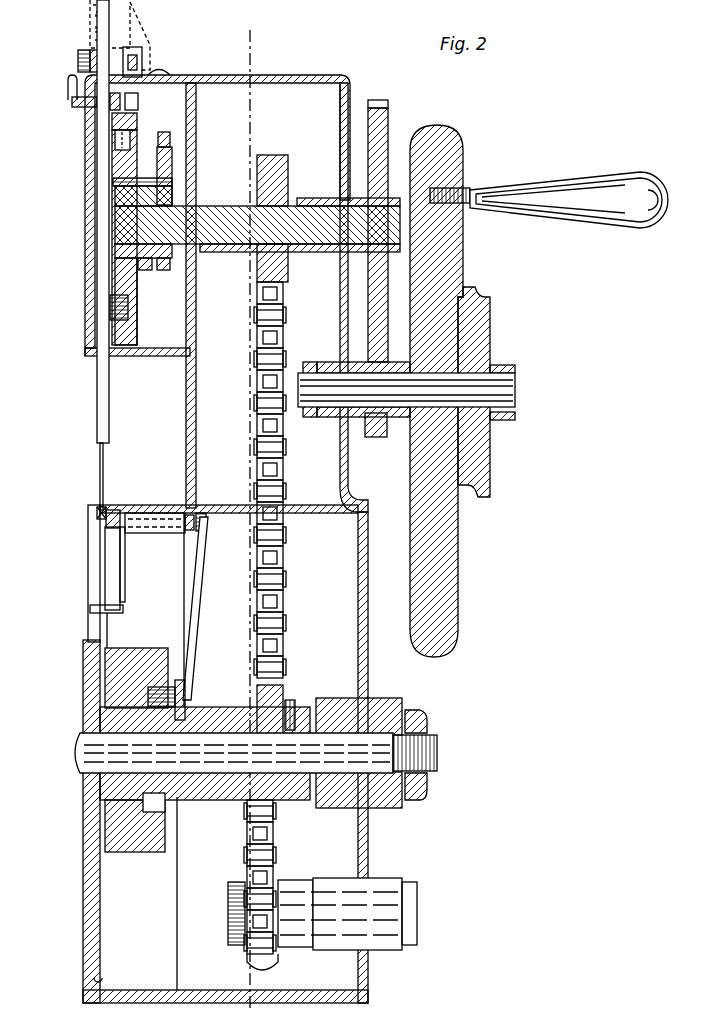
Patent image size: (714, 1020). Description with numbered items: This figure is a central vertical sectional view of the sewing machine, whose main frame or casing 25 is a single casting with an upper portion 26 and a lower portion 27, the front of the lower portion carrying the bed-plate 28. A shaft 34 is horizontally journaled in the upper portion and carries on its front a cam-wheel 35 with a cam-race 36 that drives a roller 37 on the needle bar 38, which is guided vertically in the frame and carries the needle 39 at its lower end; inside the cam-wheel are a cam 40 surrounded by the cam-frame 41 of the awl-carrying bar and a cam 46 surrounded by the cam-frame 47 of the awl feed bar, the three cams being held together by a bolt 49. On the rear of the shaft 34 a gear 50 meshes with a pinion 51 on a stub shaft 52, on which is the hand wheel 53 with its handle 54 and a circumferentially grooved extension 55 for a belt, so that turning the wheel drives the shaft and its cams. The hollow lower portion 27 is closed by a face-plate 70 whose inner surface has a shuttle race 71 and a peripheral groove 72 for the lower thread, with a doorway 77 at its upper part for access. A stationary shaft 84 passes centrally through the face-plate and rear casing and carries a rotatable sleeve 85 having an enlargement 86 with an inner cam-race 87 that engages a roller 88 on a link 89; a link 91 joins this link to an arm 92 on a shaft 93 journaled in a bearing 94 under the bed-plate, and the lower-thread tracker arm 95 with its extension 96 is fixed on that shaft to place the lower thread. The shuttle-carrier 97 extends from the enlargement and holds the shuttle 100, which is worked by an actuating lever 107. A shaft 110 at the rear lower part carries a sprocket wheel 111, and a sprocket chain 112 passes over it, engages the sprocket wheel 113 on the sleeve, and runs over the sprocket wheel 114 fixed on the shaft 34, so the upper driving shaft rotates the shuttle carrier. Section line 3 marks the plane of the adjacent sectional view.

The section line 3— 3 is at (205, 52).
The main frame or casing 25 is at (187, 378).
The upper portion of the frame 26 is at (330, 78).
The lower portion of the frame 27 is at (366, 843).
The bed-plate 28 is at (140, 508).
The shaft 34 is at (200, 215).
The cam-wheel 35 is at (140, 128).
The cam-race 36 is at (130, 147).
The roller 37 is at (118, 309).
The needle bar 38 is at (100, 266).
The needle 39 is at (100, 468).
The cam 40 is at (115, 198).
The cam-frame 41 is at (150, 271).
The cam 46 is at (172, 156).
The cam-frame 47 is at (170, 138).
The bolt 49 is at (115, 183).
The gear 50 is at (389, 130).
The pinion 51 is at (375, 438).
The stub shaft 52 is at (406, 391).
The hand wheel 53 is at (458, 246).
The handle 54 is at (549, 200).
The circumferentially grooved extension 55 is at (490, 332).
The face-plate 70 is at (84, 875).
The shuttle race 71 is at (92, 985).
The peripheral groove 72 is at (100, 975).
The doorway 77 is at (88, 592).
The stationary shaft 84 is at (256, 753).
The sleeve 85 is at (206, 712).
The enlargement 86 is at (135, 656).
The cam-race 87 is at (158, 805).
The roller 88 is at (161, 689).
The link 89 is at (186, 682).
The link 91 is at (203, 595).
The arm 92 is at (202, 516).
The shaft 93 is at (188, 516).
The bearing 94 is at (170, 531).
The lower-thread tracker arm 95 is at (126, 590).
The extension 96 is at (95, 611).
The shuttle-carrier 97 is at (110, 560).
The shuttle 100 is at (99, 508).
The actuating lever 107 is at (116, 511).
The shaft 110 is at (236, 915).
The sprocket wheel 111 is at (274, 872).
The sprocket chain 112 is at (256, 336).
The sprocket wheel 113 is at (300, 706).
The sprocket wheel 114 is at (289, 180).